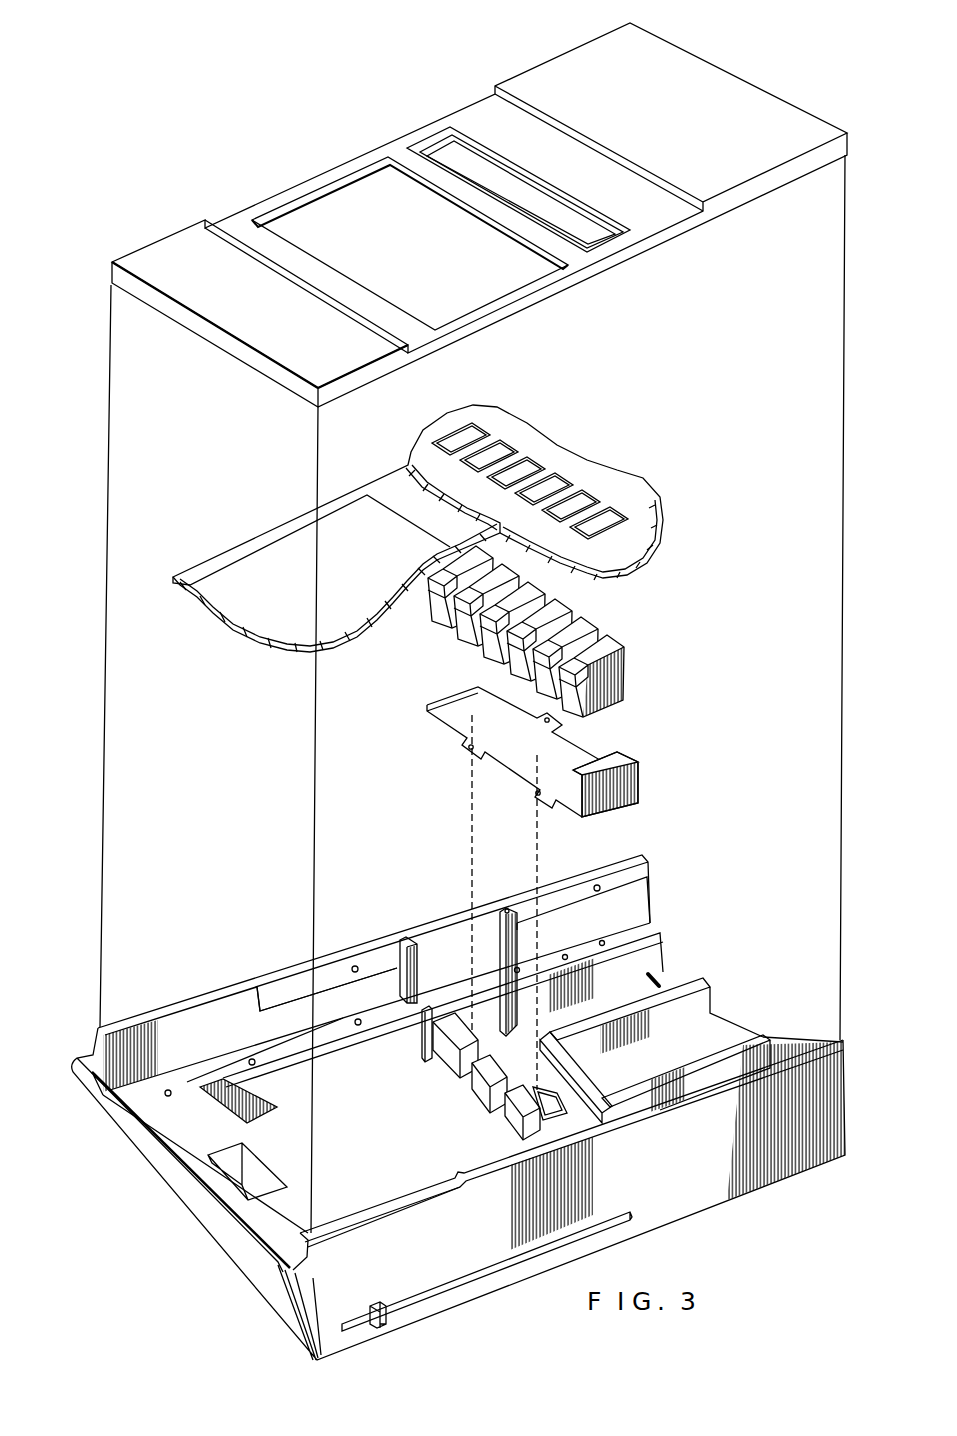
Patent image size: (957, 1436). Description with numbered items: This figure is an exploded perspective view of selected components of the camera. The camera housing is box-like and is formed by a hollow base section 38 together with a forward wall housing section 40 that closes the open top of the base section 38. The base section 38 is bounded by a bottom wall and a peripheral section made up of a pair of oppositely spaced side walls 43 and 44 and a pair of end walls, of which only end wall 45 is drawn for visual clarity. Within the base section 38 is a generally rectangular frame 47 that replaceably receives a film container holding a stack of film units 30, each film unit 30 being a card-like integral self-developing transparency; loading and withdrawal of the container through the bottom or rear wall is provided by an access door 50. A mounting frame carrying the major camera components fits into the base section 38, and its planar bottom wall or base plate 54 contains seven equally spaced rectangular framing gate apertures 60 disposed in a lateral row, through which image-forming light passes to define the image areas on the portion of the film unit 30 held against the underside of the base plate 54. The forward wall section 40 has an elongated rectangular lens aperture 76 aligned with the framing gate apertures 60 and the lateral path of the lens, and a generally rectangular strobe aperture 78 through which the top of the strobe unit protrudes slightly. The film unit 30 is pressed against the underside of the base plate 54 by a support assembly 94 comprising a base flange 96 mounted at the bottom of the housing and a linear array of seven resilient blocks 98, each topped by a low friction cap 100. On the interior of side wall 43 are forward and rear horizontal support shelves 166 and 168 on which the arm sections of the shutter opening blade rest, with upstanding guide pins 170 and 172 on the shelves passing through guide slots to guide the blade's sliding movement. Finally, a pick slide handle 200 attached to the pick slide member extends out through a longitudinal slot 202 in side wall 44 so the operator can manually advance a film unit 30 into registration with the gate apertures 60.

The film unit 30 is at (388, 488).
The base section 38 is at (82, 1046).
The forward wall housing section 40 is at (195, 240).
The side wall 43 is at (213, 993).
The side wall 44 is at (440, 1302).
The end wall 45 is at (197, 1230).
The frame 47 is at (228, 1088).
The access door 50 is at (407, 1149).
The base plate 54 is at (638, 488).
The framing gate apertures 60 is at (497, 447).
The lens aperture 76 is at (440, 153).
The strobe aperture 78 is at (340, 208).
The support assembly 94 is at (632, 637).
The base flange 96 is at (610, 806).
The resilient blocks 98 is at (460, 637).
The low friction cap 100 is at (590, 633).
The forward horizontal support shelf 166 is at (563, 902).
The rear horizontal support shelf 168 is at (295, 992).
The guide pin 170 is at (598, 885).
The guide pin 172 is at (356, 965).
The pick slide handle 200 is at (374, 1310).
The longitudinal slot 202 is at (476, 1275).